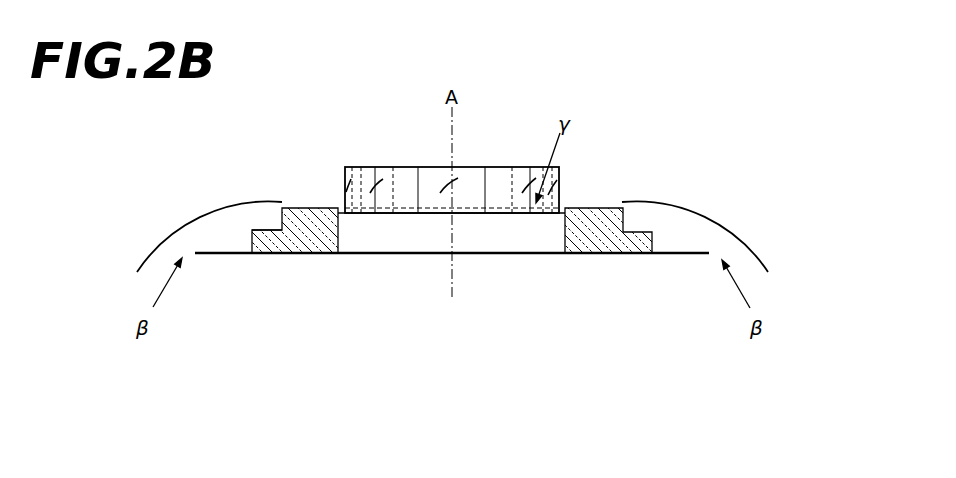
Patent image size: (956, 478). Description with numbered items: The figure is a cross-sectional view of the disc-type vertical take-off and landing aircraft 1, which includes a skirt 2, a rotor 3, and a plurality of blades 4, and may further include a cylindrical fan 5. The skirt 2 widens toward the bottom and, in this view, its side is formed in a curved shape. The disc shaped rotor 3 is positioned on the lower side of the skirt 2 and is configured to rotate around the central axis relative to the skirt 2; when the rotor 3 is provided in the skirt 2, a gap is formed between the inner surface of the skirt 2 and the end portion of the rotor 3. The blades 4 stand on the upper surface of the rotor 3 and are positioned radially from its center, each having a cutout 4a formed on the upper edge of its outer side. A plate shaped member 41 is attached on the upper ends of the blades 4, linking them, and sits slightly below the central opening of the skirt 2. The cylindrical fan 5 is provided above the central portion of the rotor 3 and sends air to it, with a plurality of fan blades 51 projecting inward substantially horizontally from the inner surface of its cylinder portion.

The disc-type vertical take-off and landing aircraft 1 is at (645, 163).
The skirt 2 is at (200, 217).
The rotor 3 is at (377, 254).
The blade 4 is at (298, 209).
The cutout 4a is at (266, 229).
The cylindrical fan 5 is at (363, 167).
The plate shaped member 41 is at (590, 208).
The fan blade 51 is at (528, 182).